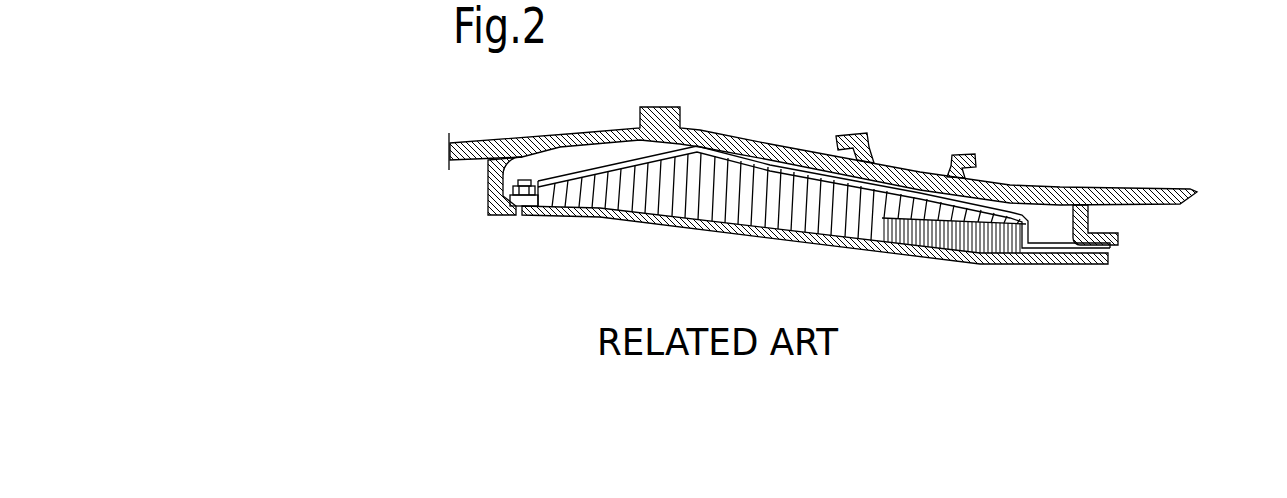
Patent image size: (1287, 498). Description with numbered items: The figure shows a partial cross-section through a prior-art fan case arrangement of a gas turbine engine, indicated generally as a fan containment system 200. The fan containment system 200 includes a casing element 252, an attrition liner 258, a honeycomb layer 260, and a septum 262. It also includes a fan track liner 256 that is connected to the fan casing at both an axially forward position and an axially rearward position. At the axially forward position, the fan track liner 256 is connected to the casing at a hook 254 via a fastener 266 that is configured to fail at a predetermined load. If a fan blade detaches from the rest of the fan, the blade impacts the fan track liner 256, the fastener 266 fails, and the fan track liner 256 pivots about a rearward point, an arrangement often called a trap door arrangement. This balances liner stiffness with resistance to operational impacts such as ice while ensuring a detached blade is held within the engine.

The fan containment system 200 is at (819, 154).
The casing element 252 is at (598, 129).
The hook 254 is at (488, 214).
The fan track liner 256 is at (566, 172).
The attrition liner 258 is at (671, 212).
The honeycomb layer 260 is at (738, 183).
The septum 262 is at (701, 146).
The fastener 266 is at (513, 206).